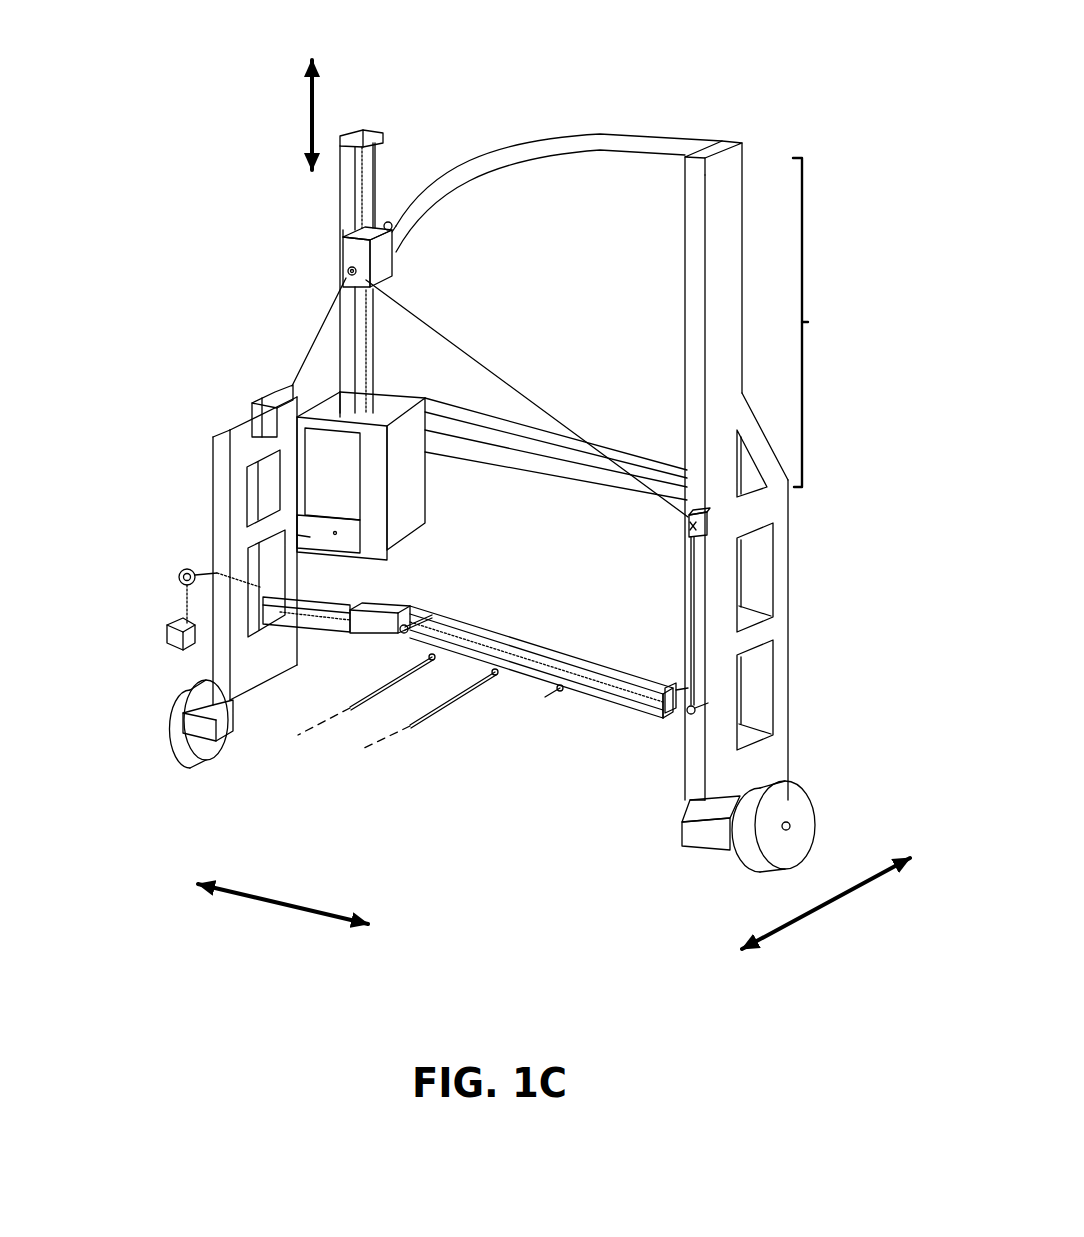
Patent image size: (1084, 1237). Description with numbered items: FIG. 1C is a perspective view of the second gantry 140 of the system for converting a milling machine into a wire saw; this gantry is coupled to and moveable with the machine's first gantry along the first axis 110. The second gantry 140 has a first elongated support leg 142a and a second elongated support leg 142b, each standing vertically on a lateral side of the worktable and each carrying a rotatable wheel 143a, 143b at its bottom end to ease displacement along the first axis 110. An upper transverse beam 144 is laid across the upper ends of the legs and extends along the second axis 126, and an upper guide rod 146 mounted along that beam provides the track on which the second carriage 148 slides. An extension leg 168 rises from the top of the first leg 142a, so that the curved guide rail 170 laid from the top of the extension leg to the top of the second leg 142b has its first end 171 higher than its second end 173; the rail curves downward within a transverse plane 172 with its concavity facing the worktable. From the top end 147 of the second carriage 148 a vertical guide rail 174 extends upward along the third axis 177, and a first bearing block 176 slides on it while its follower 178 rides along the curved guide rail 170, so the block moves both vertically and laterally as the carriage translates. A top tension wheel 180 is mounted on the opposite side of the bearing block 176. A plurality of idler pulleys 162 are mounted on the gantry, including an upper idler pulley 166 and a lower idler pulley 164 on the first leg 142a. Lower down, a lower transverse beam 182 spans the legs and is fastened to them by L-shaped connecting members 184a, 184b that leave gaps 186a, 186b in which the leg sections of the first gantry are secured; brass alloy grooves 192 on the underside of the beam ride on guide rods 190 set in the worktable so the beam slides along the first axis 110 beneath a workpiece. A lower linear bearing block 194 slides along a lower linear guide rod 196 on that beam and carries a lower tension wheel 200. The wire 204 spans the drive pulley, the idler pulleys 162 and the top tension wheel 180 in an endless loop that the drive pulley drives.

The first axis 110 is at (855, 890).
The second axis 126 is at (275, 905).
The second gantry 140 is at (792, 527).
The first elongated support leg 142a is at (790, 573).
The second elongated support leg 142b is at (213, 467).
The rotatable wheel 143a is at (816, 812).
The rotatable wheel 143b is at (176, 713).
The upper transverse beam 144 is at (656, 466).
The upper guide rod 146 is at (467, 445).
The top end of second carriage 147 is at (388, 392).
The second carriage 148 is at (430, 487).
The plurality of idler pulleys 162 is at (712, 537).
The lower idler pulley 164 is at (689, 714).
The upper idler pulley 166 is at (686, 527).
The extension leg 168 is at (828, 322).
The curved guide rail 170 is at (558, 136).
The first end of curved guide rail 171 is at (712, 140).
The transverse plane 172 is at (631, 219).
The second end of curved guide rail 173 is at (292, 378).
The vertical guide rail 174 is at (340, 360).
The first bearing block 176 is at (340, 250).
The third axis 177 is at (304, 126).
The follower 178 is at (389, 222).
The top tension wheel 180 is at (345, 272).
The lower transverse beam 182 is at (523, 637).
The L-shaped connecting member 184a is at (640, 685).
The L-shaped connecting member 184b is at (287, 583).
The gap 186a is at (677, 693).
The gap 186b is at (294, 585).
The guide rods 190 is at (350, 708).
The brass alloy grooves 192 is at (432, 660).
The lower linear bearing block 194 is at (400, 617).
The lower linear guide rod 196 is at (417, 633).
The lower tension wheel 200 is at (350, 633).
The wire 204 is at (468, 350).